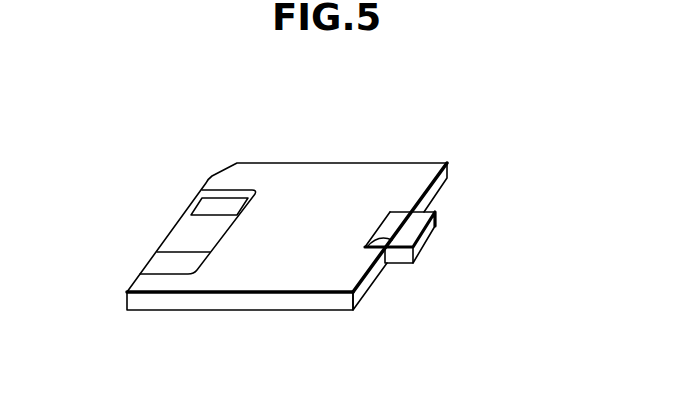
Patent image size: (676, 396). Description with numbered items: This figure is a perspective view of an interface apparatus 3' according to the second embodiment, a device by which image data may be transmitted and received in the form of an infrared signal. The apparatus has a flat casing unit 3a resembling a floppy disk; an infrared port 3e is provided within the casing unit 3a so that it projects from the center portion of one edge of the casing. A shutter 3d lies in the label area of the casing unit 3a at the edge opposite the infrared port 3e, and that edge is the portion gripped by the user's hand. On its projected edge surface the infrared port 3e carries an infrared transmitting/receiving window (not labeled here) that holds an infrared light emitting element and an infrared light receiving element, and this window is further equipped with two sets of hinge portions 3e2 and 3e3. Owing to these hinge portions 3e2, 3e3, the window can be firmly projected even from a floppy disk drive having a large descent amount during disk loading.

The interface apparatus 3' is at (341, 195).
The casing unit 3a is at (363, 170).
The shutter 3d is at (182, 225).
The infrared port 3e is at (428, 211).
The hinge portion 3e2 is at (377, 228).
The hinge portion 3e3 is at (375, 247).